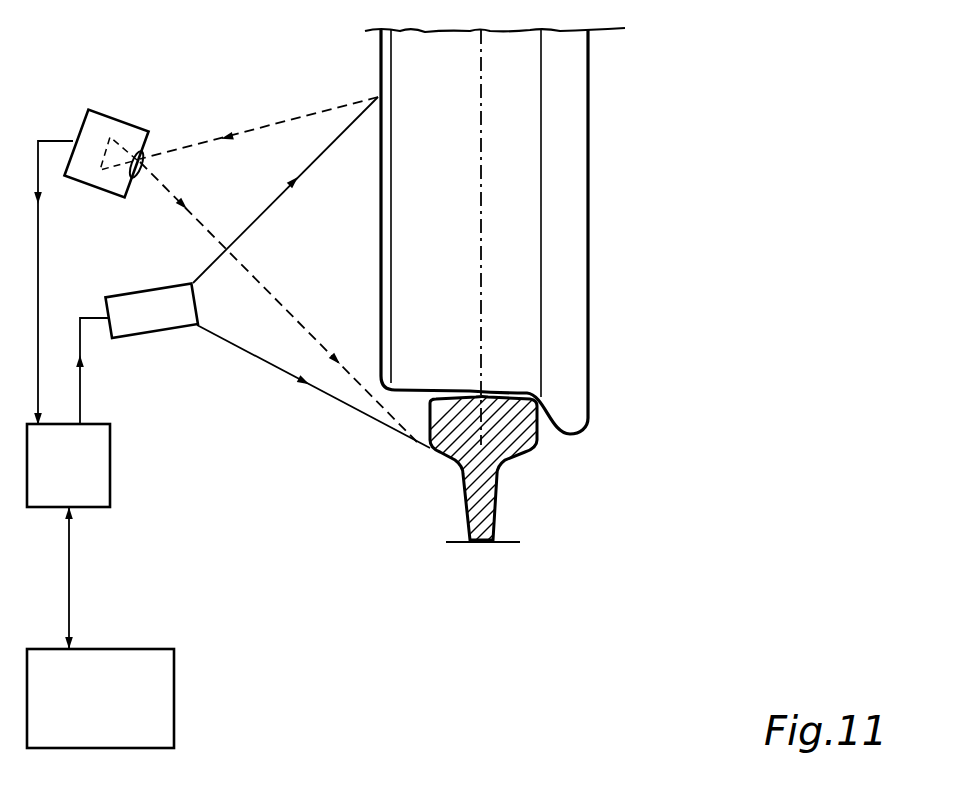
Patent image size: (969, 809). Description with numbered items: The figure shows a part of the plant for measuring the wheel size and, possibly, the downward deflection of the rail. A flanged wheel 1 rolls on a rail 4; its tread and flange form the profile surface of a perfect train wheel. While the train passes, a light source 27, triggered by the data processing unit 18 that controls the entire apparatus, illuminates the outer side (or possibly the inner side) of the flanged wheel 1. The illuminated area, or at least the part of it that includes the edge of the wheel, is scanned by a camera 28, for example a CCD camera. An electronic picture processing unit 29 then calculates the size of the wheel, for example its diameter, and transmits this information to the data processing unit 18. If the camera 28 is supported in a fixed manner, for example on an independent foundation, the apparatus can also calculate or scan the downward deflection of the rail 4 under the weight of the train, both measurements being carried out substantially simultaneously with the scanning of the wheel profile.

The flanged wheel 1 is at (591, 103).
The rail 4 is at (507, 453).
The data processing unit 18 is at (112, 717).
The light source 27 is at (133, 302).
The camera 28 is at (133, 136).
The electronic picture processing unit 29 is at (84, 479).